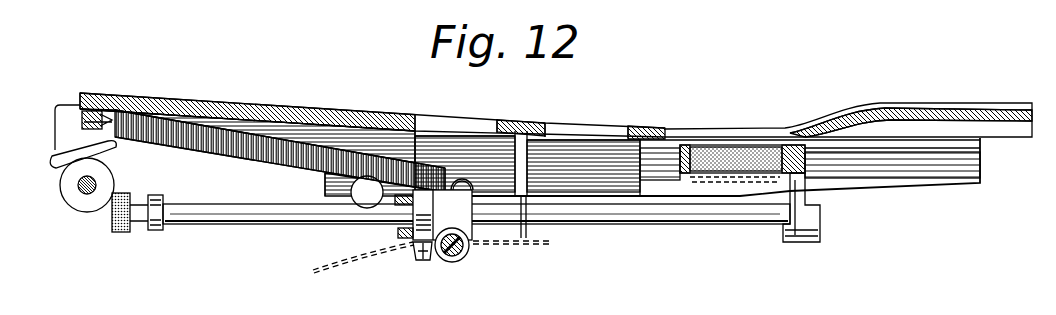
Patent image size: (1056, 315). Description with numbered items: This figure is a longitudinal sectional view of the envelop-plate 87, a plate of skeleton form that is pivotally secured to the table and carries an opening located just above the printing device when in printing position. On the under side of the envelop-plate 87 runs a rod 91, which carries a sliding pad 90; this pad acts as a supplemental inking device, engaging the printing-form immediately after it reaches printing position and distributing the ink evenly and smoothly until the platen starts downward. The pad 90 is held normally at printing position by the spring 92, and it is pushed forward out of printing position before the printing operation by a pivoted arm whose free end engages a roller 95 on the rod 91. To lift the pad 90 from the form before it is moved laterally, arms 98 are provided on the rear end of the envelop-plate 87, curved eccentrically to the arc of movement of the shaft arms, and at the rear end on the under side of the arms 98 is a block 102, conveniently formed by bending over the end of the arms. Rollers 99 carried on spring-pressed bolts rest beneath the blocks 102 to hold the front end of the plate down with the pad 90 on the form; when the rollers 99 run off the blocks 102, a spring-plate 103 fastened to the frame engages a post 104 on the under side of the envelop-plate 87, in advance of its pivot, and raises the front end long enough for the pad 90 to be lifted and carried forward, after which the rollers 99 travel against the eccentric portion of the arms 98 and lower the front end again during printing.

The envelop-plate 87 is at (922, 110).
The sliding pad 90 is at (710, 173).
The rod 91 is at (607, 232).
The spring 92 is at (280, 153).
The roller 95 is at (465, 256).
The arms 98 is at (117, 146).
The rollers 99 is at (86, 207).
The block 102 is at (62, 154).
The spring-plate 103 is at (372, 258).
The post 104 is at (522, 238).